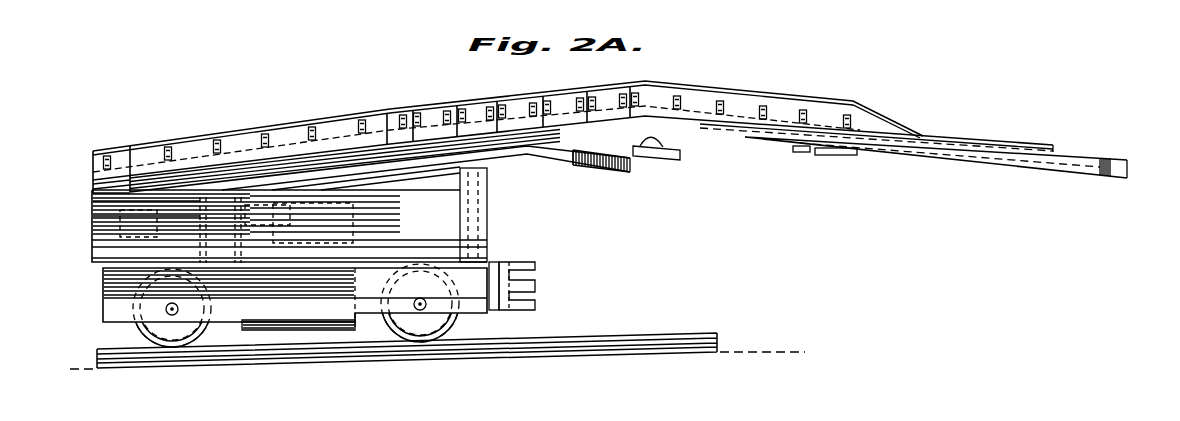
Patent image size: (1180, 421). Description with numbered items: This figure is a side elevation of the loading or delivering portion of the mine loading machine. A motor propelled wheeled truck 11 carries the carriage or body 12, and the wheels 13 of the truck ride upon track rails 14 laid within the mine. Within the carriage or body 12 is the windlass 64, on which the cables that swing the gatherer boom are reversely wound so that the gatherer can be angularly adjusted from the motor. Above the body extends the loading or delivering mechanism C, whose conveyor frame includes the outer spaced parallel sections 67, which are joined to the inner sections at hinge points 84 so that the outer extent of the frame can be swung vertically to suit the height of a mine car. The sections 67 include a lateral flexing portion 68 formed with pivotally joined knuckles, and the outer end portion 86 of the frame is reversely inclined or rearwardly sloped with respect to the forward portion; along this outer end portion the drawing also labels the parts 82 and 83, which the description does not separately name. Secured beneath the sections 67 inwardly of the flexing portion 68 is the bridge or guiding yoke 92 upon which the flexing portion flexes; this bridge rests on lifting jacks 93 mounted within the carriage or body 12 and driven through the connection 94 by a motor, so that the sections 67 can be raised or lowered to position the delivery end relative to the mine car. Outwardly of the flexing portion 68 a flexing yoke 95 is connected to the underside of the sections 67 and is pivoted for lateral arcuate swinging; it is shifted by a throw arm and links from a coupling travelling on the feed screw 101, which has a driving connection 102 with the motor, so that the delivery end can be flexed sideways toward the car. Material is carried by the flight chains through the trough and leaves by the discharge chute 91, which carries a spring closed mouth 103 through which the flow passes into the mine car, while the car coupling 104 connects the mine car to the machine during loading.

The loading or delivering mechanism C is at (301, 118).
The motor propelled wheeled truck 11 is at (98, 295).
The carriage or body 12 is at (90, 231).
The wheels 13 is at (137, 333).
The track rails 14 is at (593, 338).
The windlass 64 is at (345, 205).
The outer sections of conveyor frame 67 is at (376, 140).
The lateral flexing portion 68 is at (523, 118).
The extension plate 82 is at (974, 140).
The extension tip 83 is at (1104, 163).
The hinge points 84 is at (133, 183).
The outer end portion of conveyor frame 86 is at (912, 160).
The discharge chute 91 is at (630, 153).
The bridge or guiding yoke 92 is at (527, 150).
The lifting jacks 93 is at (488, 212).
The connection 94 is at (487, 246).
The flexing yoke 95 is at (753, 145).
The feed screw 101 is at (93, 201).
The driving connection 102 is at (93, 216).
The spring closed mouth 103 is at (668, 158).
The car coupling 104 is at (538, 265).